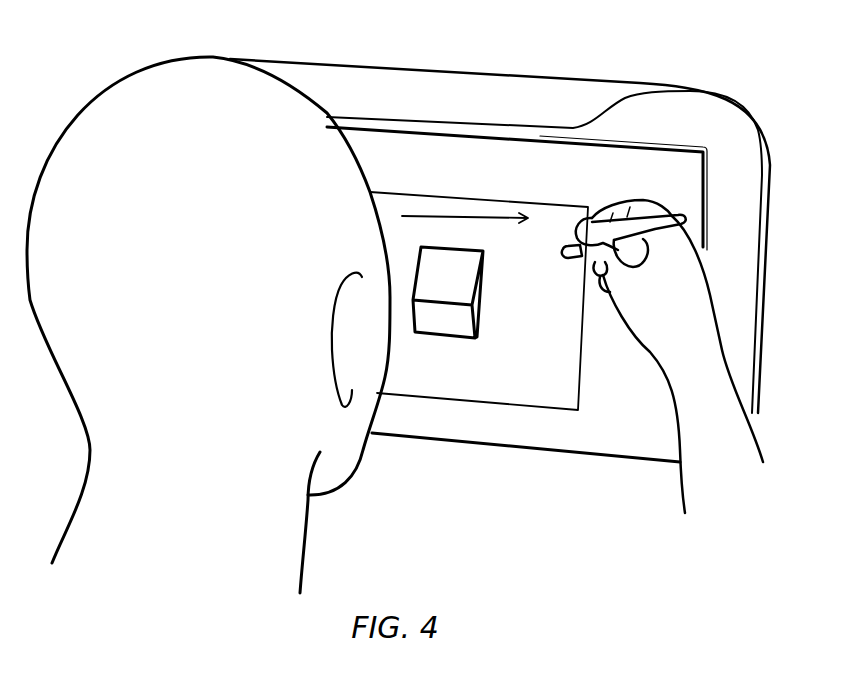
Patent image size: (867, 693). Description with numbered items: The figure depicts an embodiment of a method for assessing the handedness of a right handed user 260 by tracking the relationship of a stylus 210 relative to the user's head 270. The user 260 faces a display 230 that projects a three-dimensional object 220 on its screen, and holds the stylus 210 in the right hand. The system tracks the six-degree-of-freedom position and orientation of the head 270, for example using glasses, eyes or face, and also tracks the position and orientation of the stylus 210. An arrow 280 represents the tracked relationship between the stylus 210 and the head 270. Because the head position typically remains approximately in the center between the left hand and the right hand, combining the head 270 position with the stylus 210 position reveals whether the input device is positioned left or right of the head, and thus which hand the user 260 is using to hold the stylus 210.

The stylus 210 is at (665, 215).
The 3D object 220 is at (447, 328).
The display 230 is at (430, 181).
The right handed user 260 is at (654, 311).
The user's head 270 is at (162, 261).
The arrow 280 is at (488, 216).